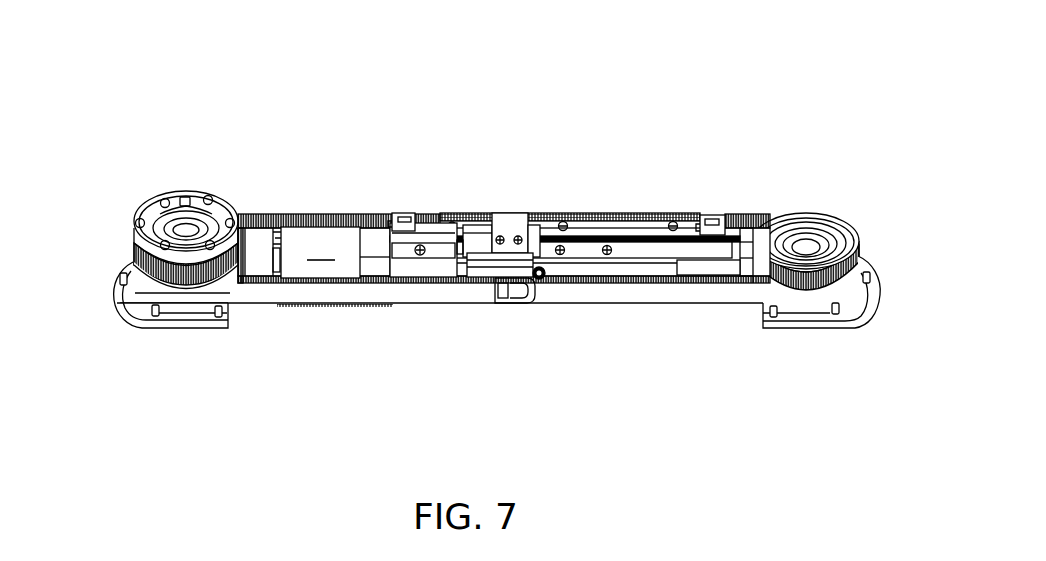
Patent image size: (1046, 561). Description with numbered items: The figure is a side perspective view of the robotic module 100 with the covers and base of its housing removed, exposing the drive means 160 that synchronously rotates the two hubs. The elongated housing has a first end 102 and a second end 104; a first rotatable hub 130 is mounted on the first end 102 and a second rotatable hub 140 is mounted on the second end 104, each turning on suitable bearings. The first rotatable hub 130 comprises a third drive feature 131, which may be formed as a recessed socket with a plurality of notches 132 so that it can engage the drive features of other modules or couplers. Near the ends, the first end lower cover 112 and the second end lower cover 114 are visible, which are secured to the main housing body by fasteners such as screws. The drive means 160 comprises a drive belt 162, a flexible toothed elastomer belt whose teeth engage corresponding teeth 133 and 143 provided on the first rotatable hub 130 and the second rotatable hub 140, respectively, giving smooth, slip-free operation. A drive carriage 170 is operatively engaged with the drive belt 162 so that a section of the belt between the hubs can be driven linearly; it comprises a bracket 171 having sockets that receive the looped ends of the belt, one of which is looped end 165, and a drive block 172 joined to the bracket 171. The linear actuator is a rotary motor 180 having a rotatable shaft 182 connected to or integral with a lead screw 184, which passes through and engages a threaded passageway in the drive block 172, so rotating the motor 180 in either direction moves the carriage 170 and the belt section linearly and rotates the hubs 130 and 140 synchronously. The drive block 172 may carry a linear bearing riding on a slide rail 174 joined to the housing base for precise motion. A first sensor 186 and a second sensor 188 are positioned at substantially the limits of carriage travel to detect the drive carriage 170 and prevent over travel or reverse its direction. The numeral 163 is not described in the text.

The robotic module 100 is at (667, 88).
The first end 102 is at (117, 303).
The second end 104 is at (872, 308).
The first end lower cover 112 is at (145, 318).
The second end lower cover 114 is at (817, 332).
The first rotatable hub 130 is at (210, 180).
The third drive feature 131 is at (178, 208).
The notches 132 is at (210, 215).
The teeth 133 is at (243, 266).
The second rotatable hub 140 is at (848, 211).
The teeth 143 is at (770, 224).
The drive means 160 is at (503, 332).
The drive belt 162 is at (334, 213).
The belt clamp 163 is at (274, 213).
The looped end 165 is at (541, 278).
The drive carriage 170 is at (509, 208).
The bracket 171 is at (477, 278).
The drive block 172 is at (477, 247).
The slide rail 174 is at (620, 223).
The rotary motor 180 is at (320, 252).
The rotatable shaft 182 is at (407, 266).
The lead screw 184 is at (618, 270).
The first sensor 186 is at (405, 215).
The second sensor 188 is at (708, 216).